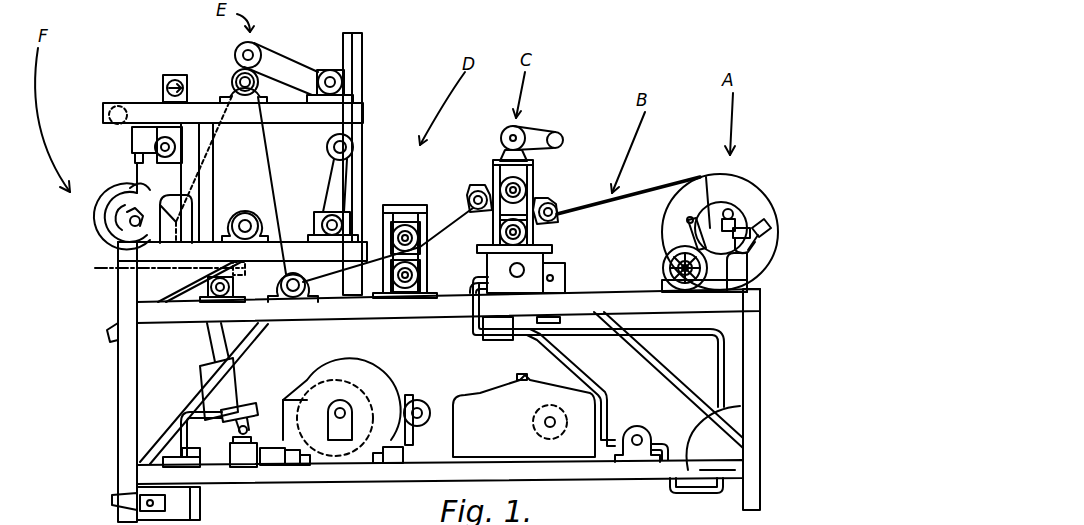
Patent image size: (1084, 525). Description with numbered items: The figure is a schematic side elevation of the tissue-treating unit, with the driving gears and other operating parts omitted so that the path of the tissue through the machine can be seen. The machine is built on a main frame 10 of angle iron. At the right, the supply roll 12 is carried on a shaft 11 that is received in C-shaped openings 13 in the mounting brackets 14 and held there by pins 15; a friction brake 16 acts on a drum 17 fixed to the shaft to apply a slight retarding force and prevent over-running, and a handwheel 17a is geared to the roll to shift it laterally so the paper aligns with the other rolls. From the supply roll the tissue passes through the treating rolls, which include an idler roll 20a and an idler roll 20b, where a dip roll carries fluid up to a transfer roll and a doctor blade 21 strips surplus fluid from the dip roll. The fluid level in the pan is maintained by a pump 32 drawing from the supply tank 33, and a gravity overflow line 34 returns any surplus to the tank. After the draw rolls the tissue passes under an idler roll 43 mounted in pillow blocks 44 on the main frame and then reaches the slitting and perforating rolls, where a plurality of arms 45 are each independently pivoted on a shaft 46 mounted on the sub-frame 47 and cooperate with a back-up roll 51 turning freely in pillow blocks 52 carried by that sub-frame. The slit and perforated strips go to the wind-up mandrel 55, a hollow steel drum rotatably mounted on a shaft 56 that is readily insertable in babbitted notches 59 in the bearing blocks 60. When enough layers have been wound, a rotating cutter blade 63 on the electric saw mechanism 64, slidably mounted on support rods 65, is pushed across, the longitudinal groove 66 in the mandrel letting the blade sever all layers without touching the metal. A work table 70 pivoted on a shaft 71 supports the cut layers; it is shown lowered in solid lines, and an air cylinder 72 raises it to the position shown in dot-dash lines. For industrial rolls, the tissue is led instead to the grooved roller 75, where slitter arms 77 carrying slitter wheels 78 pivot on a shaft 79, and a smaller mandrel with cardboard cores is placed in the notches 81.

The main frame 10 is at (753, 367).
The shaft 11 is at (705, 176).
The supply roll 12 is at (737, 179).
The C-shaped openings 13 is at (773, 243).
The mounting brackets 14 is at (690, 240).
The pins 15 is at (735, 210).
The friction brake 16 is at (747, 209).
The drum 17 is at (749, 222).
The handwheel 17a is at (663, 268).
The idler roll 20a is at (556, 214).
The idler roll 20b is at (476, 193).
The doctor blade 21 is at (547, 261).
The pump 32 is at (642, 427).
The supply tank 33 is at (703, 418).
The gravity overflow line 34 is at (700, 337).
The idler roll 43 is at (304, 282).
The pillow blocks 44 is at (305, 297).
The arms 45 is at (281, 62).
The shaft 46 is at (330, 70).
The sub-frame 47 is at (352, 112).
The back-up roll 51 is at (240, 58).
The pillow blocks 52 is at (233, 84).
The wind-up mandrel 55 is at (112, 200).
The shaft 56 is at (128, 224).
The babbitted notches 59 is at (160, 198).
The bearing blocks 60 is at (188, 196).
The rotating cutter blade 63 is at (135, 168).
The electric saw mechanism 64 is at (133, 140).
The support rods 65 is at (163, 133).
The longitudinal groove 66 is at (137, 186).
The work table 70 is at (96, 269).
The shaft 71 is at (233, 288).
The air cylinder 72 is at (234, 392).
The roller 75 is at (253, 205).
The slitter arms 77 is at (335, 177).
The slitter wheels 78 is at (327, 148).
The shaft 79 is at (322, 224).
The notches 81 is at (128, 217).